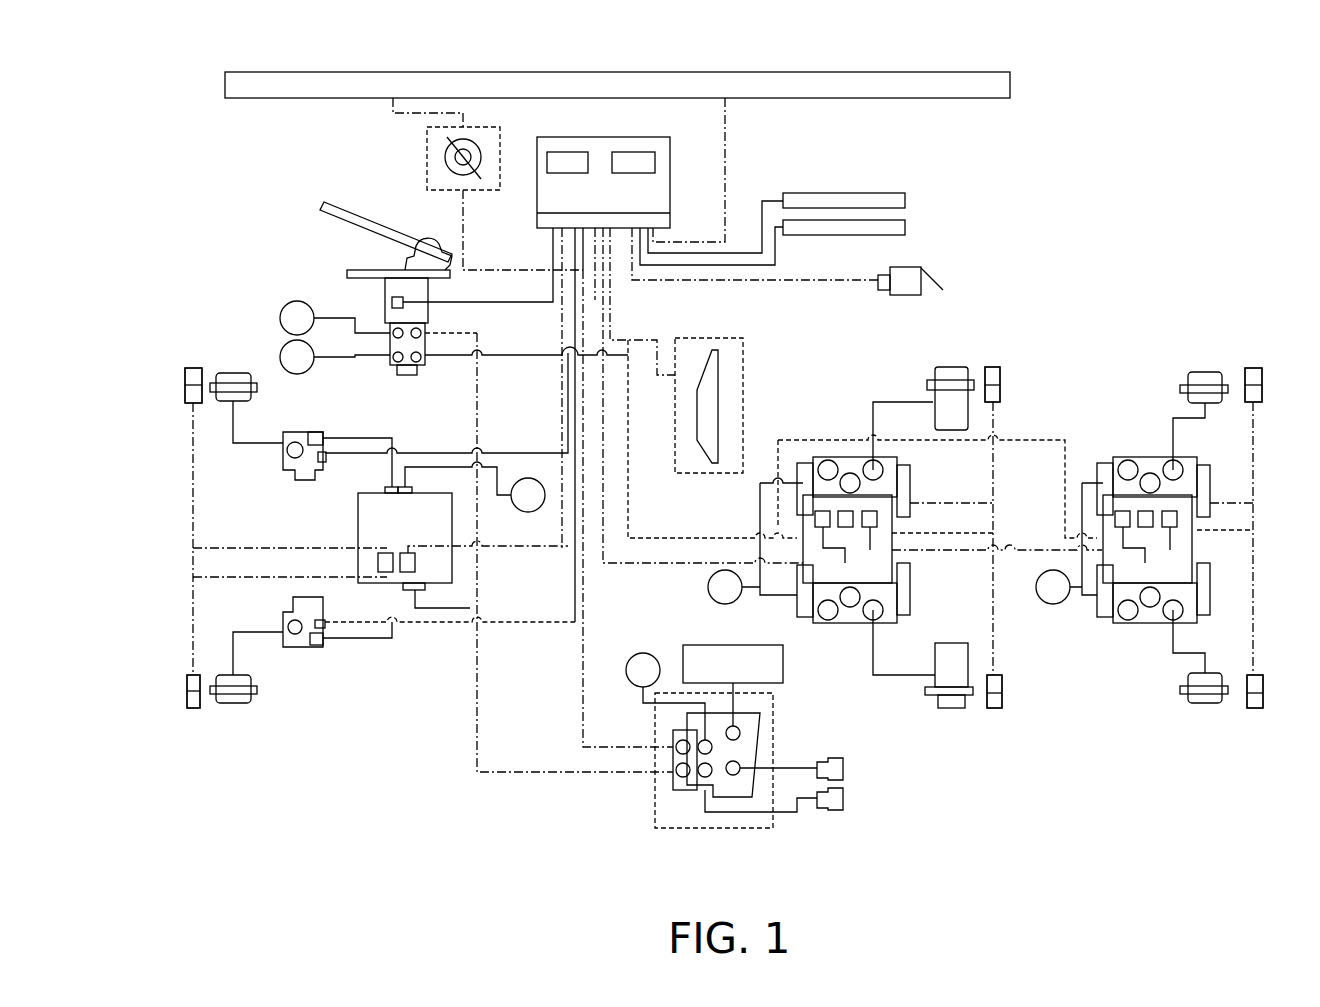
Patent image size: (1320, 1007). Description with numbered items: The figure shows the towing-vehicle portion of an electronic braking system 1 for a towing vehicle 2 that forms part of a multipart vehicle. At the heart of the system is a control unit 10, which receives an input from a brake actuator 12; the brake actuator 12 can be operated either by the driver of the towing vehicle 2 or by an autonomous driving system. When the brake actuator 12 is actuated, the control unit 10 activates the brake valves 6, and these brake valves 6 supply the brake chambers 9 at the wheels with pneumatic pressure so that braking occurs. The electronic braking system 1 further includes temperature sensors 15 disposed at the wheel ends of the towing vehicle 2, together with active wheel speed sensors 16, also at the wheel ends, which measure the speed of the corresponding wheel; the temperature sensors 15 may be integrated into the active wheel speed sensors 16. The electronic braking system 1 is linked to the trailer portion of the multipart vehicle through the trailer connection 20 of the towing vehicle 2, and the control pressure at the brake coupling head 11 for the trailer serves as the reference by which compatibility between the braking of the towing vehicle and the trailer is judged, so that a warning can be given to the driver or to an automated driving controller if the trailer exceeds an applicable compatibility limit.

The electronic braking system 1 is at (1172, 132).
The towing vehicle 2 is at (495, 882).
The brake valves 6 is at (293, 432).
The brake chambers 9 is at (235, 372).
The control unit 10 is at (612, 137).
The brake coupling head 11 is at (840, 777).
The brake actuator 12 is at (362, 244).
The temperature sensors 15 is at (185, 399).
The active wheel speed sensors 16 is at (188, 367).
The trailer connection 20 is at (912, 267).